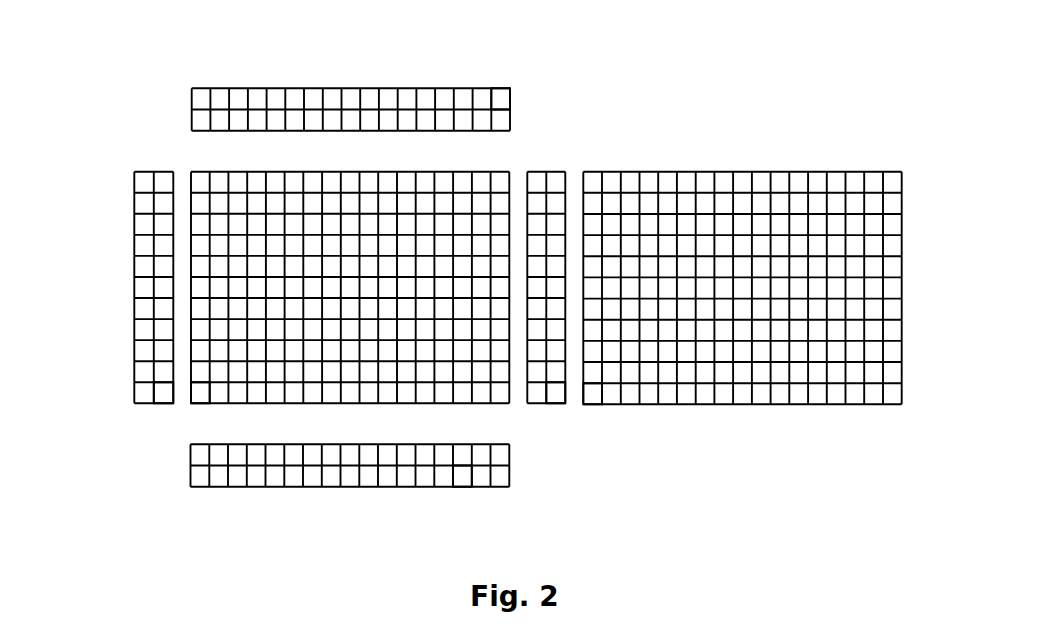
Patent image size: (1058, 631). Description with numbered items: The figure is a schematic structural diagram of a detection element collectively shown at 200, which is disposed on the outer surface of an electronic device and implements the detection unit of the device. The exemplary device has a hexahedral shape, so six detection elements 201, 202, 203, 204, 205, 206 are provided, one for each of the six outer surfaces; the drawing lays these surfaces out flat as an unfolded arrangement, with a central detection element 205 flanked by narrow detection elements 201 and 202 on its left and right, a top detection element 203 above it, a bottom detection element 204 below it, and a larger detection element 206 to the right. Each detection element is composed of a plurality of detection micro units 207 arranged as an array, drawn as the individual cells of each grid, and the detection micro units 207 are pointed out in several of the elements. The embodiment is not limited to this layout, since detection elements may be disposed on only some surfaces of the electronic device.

The detection element 200 is at (205, 62).
The detection element 201 is at (165, 172).
The detection element 202 is at (541, 170).
The detection element 203 is at (337, 88).
The detection element 204 is at (217, 487).
The detection element 205 is at (197, 175).
The detection element 206 is at (703, 170).
The detection micro unit 207 is at (502, 95).